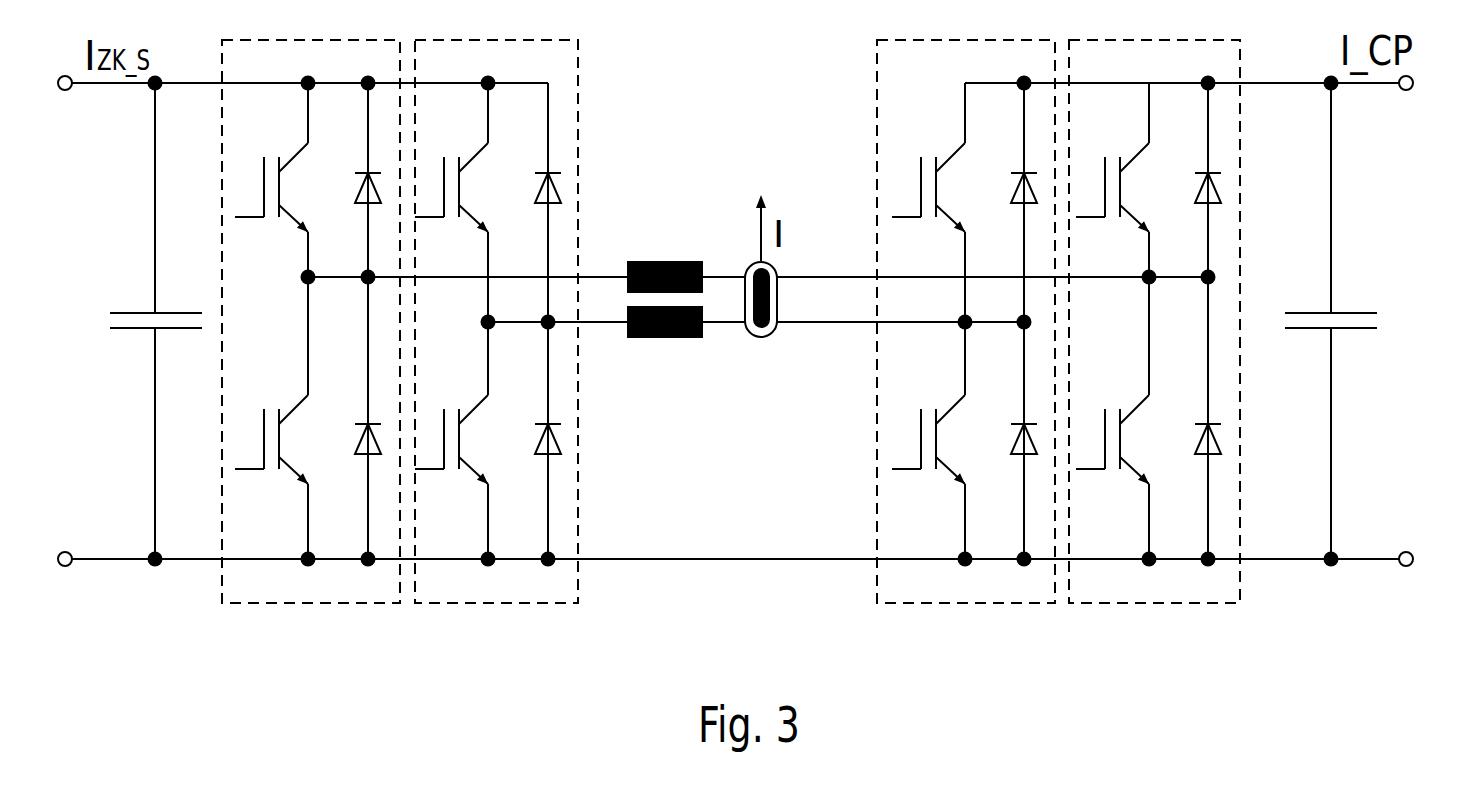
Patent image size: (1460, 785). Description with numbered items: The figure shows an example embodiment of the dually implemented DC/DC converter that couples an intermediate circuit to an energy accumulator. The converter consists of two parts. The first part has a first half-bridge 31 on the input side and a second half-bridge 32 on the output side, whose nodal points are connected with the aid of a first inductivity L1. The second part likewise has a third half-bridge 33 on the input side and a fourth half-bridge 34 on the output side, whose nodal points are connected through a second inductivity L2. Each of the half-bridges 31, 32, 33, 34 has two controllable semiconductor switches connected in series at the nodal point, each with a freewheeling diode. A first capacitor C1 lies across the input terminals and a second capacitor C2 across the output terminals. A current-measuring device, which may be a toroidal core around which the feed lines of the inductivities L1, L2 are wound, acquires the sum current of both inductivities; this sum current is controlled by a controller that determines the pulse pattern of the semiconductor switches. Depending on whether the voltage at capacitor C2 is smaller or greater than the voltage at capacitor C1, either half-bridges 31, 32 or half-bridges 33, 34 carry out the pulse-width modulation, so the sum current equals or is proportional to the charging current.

The first half-bridge 31 is at (311, 321).
The second half-bridge 32 is at (496, 321).
The third half-bridge 33 is at (966, 321).
The fourth half-bridge 34 is at (1154, 321).
The first capacitor C1 is at (132, 321).
The second capacitor C2 is at (1357, 321).
The first inductivity L1 is at (665, 254).
The second inductivity L2 is at (665, 351).